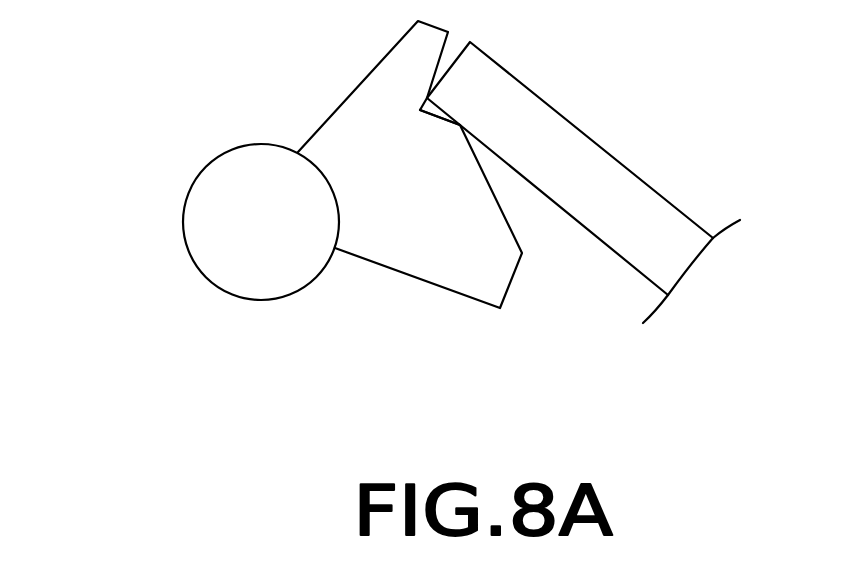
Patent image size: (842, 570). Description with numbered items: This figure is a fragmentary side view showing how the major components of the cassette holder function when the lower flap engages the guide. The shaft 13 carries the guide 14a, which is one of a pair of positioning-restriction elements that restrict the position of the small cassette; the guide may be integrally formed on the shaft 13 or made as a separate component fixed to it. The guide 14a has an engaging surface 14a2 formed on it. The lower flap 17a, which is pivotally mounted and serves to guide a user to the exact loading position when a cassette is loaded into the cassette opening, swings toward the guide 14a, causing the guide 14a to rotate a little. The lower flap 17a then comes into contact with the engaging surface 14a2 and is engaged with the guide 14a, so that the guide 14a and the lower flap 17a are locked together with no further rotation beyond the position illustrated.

The shaft 13 is at (205, 222).
The guide 14a is at (365, 117).
The engaging surface 14a2 is at (437, 117).
The lower flap 17a is at (567, 147).